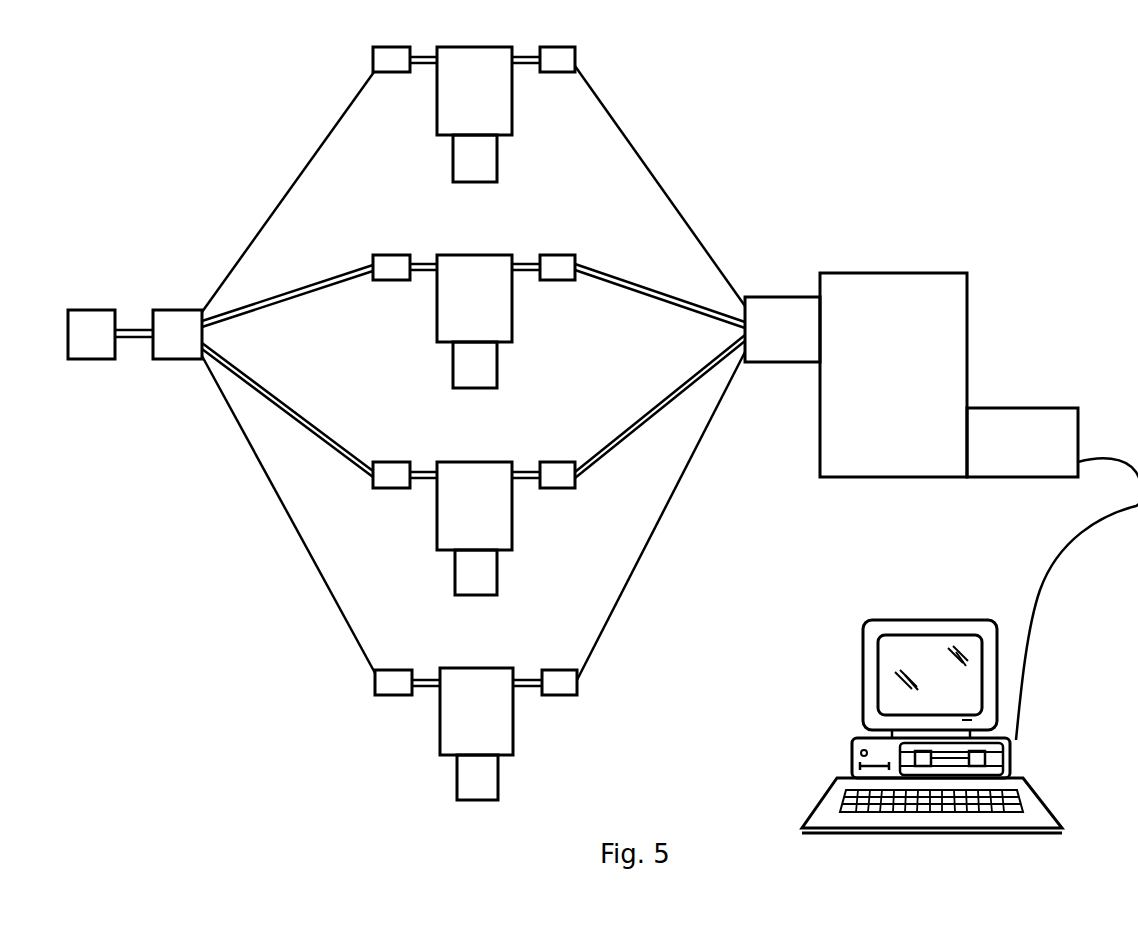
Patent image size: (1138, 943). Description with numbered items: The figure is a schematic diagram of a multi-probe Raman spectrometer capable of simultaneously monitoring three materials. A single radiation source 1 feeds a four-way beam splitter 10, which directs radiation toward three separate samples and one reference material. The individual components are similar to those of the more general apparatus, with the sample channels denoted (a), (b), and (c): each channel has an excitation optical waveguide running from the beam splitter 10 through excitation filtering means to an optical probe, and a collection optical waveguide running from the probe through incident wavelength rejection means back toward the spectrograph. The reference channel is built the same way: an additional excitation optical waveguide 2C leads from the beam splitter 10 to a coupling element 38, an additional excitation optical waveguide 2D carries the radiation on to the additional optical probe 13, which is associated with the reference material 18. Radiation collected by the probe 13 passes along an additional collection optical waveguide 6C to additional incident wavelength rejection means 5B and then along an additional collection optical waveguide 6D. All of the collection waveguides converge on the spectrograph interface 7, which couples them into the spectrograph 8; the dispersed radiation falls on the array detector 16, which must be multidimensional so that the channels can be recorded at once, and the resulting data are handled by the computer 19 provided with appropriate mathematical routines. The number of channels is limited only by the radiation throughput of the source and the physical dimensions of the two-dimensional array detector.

The radiation source 1 is at (102, 348).
The beam splitter 10 is at (194, 348).
The excitation optical waveguide 2C is at (303, 160).
The fiber connector 38 is at (392, 57).
The excitation optical waveguide 2D is at (418, 66).
The optical probe 13 is at (492, 110).
The reference sample 18 is at (490, 176).
The collection optical waveguide 6C is at (527, 58).
The incident wavelength rejection means 5B is at (563, 65).
The collection optical waveguide 6D is at (658, 175).
The spectrograph interface 7 is at (790, 345).
The spectrograph 8 is at (900, 347).
The array detector 16 is at (1032, 461).
The computer 19 is at (852, 754).